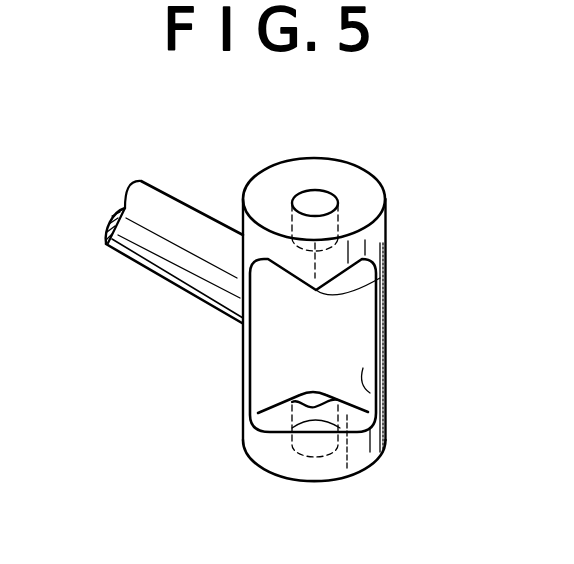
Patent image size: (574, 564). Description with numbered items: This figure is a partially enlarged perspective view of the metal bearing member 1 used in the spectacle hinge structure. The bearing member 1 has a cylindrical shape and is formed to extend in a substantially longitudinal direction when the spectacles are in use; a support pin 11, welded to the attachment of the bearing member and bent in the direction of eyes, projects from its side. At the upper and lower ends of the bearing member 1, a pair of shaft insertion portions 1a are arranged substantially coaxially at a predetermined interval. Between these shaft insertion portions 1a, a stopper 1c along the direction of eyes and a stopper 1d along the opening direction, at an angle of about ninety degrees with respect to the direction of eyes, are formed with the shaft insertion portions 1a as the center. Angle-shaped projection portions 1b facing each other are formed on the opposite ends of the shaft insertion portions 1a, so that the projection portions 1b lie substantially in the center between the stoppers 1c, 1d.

The bearing member 1 is at (387, 343).
The shaft insertion portion 1a is at (333, 199).
The angle-shaped projection portion 1b is at (380, 278).
The stopper 1c is at (258, 367).
The stopper 1d is at (372, 393).
The support pin 11 is at (155, 272).